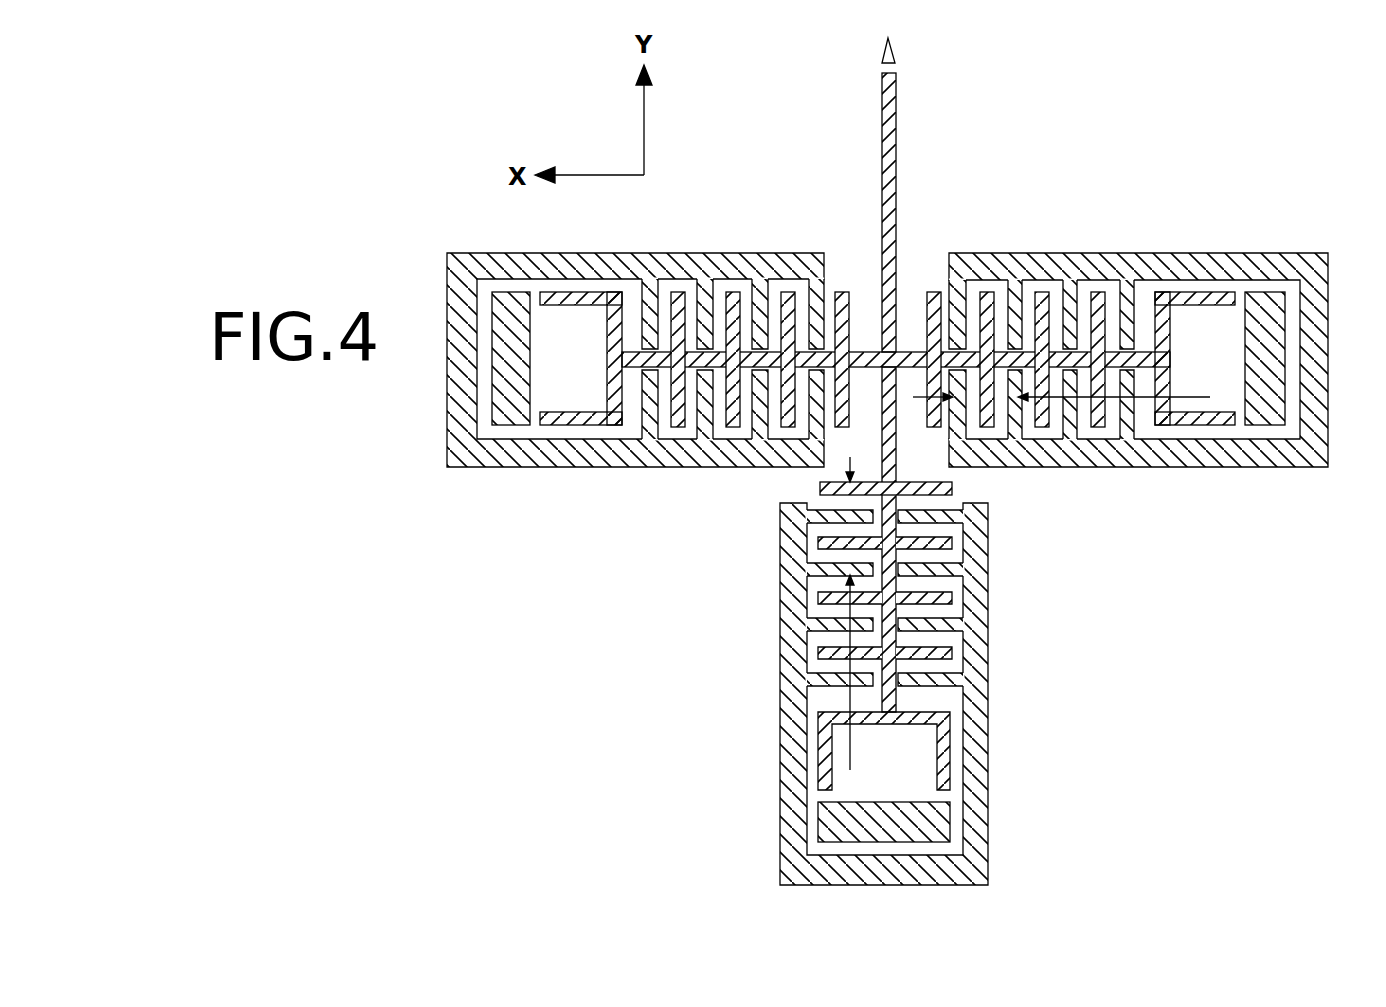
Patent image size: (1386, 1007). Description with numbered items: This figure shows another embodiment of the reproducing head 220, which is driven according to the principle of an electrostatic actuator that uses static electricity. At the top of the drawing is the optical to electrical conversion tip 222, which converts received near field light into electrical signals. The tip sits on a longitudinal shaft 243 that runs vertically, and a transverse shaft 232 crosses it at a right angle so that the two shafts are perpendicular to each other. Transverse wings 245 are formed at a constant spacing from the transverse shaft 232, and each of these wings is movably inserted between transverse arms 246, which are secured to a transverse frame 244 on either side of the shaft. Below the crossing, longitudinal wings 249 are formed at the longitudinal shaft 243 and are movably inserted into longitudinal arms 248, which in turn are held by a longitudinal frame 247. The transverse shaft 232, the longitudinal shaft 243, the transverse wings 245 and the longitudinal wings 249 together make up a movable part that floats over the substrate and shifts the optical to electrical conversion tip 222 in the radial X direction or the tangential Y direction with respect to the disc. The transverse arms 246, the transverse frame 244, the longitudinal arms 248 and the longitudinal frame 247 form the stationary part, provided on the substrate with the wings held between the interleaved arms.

The reproducing head 220 is at (1178, 112).
The optical to electrical conversion tip 222 is at (896, 59).
The longitudinal shaft 243 is at (894, 133).
The transverse shaft 232 is at (860, 352).
The transverse wings 245 is at (932, 293).
The transverse arms 246 is at (963, 290).
The transverse frame 244 is at (1007, 462).
The longitudinal wings 249 is at (906, 482).
The longitudinal frame 247 is at (983, 528).
The longitudinal arms 248 is at (940, 568).